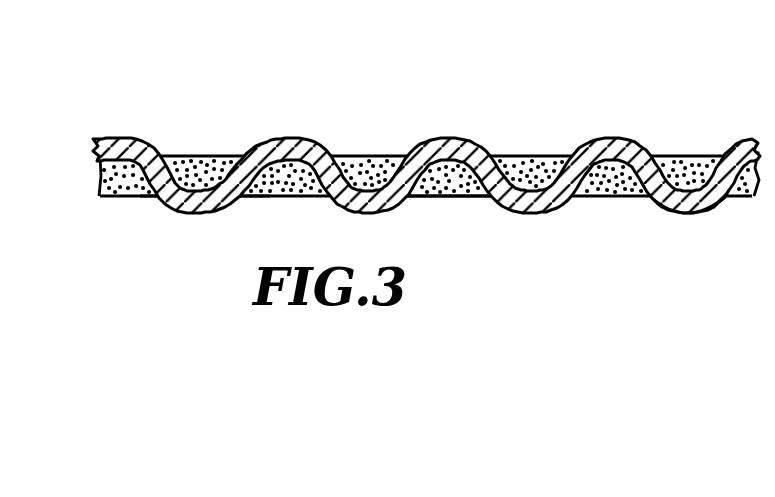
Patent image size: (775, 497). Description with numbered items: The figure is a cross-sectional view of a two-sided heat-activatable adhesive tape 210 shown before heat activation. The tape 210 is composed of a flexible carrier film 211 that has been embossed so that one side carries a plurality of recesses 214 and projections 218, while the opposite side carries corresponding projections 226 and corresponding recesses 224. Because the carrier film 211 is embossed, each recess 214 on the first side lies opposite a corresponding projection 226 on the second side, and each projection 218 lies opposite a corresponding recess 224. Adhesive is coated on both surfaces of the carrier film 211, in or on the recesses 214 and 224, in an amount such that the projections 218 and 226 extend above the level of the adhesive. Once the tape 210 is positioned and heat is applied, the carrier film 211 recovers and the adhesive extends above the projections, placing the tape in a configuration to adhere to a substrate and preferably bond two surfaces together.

The tape 210 is at (432, 169).
The flexible carrier film 211 is at (690, 205).
The recesses 214 is at (429, 176).
The projections 218 is at (426, 174).
The corresponding recesses 224 is at (263, 200).
The corresponding projections 226 is at (505, 203).